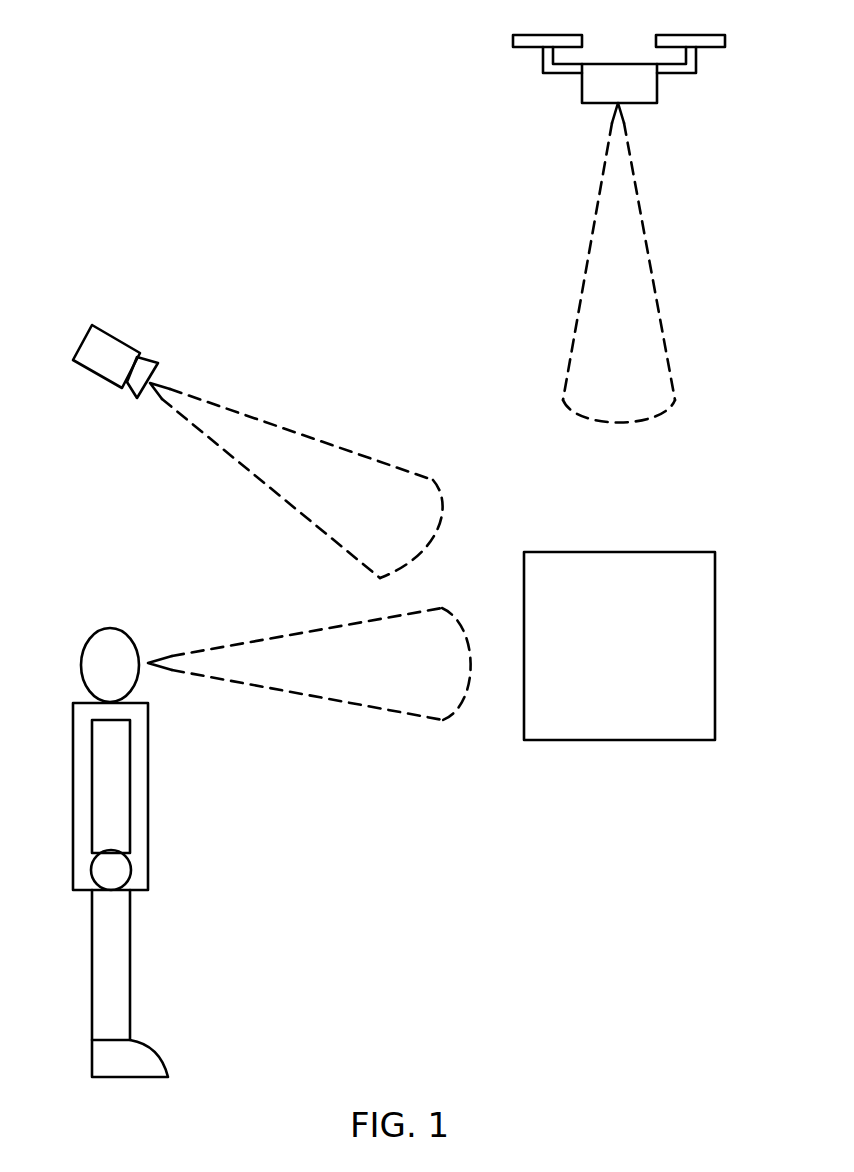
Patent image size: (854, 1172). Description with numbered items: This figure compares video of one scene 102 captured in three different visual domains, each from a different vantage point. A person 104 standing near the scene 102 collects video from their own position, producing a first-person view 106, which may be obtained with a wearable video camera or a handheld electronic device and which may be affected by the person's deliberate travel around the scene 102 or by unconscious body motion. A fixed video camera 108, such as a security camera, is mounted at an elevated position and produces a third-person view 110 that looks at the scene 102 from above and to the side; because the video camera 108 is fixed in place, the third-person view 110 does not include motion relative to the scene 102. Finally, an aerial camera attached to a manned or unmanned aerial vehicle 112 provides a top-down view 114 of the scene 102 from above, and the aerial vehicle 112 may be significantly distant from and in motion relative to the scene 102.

The scene 102 is at (619, 646).
The person 104 is at (148, 775).
The first-person view 106 is at (370, 705).
The video camera 108 is at (133, 349).
The third-person view 110 is at (372, 457).
The aerial vehicle 112 is at (582, 88).
The top-down view 114 is at (563, 410).